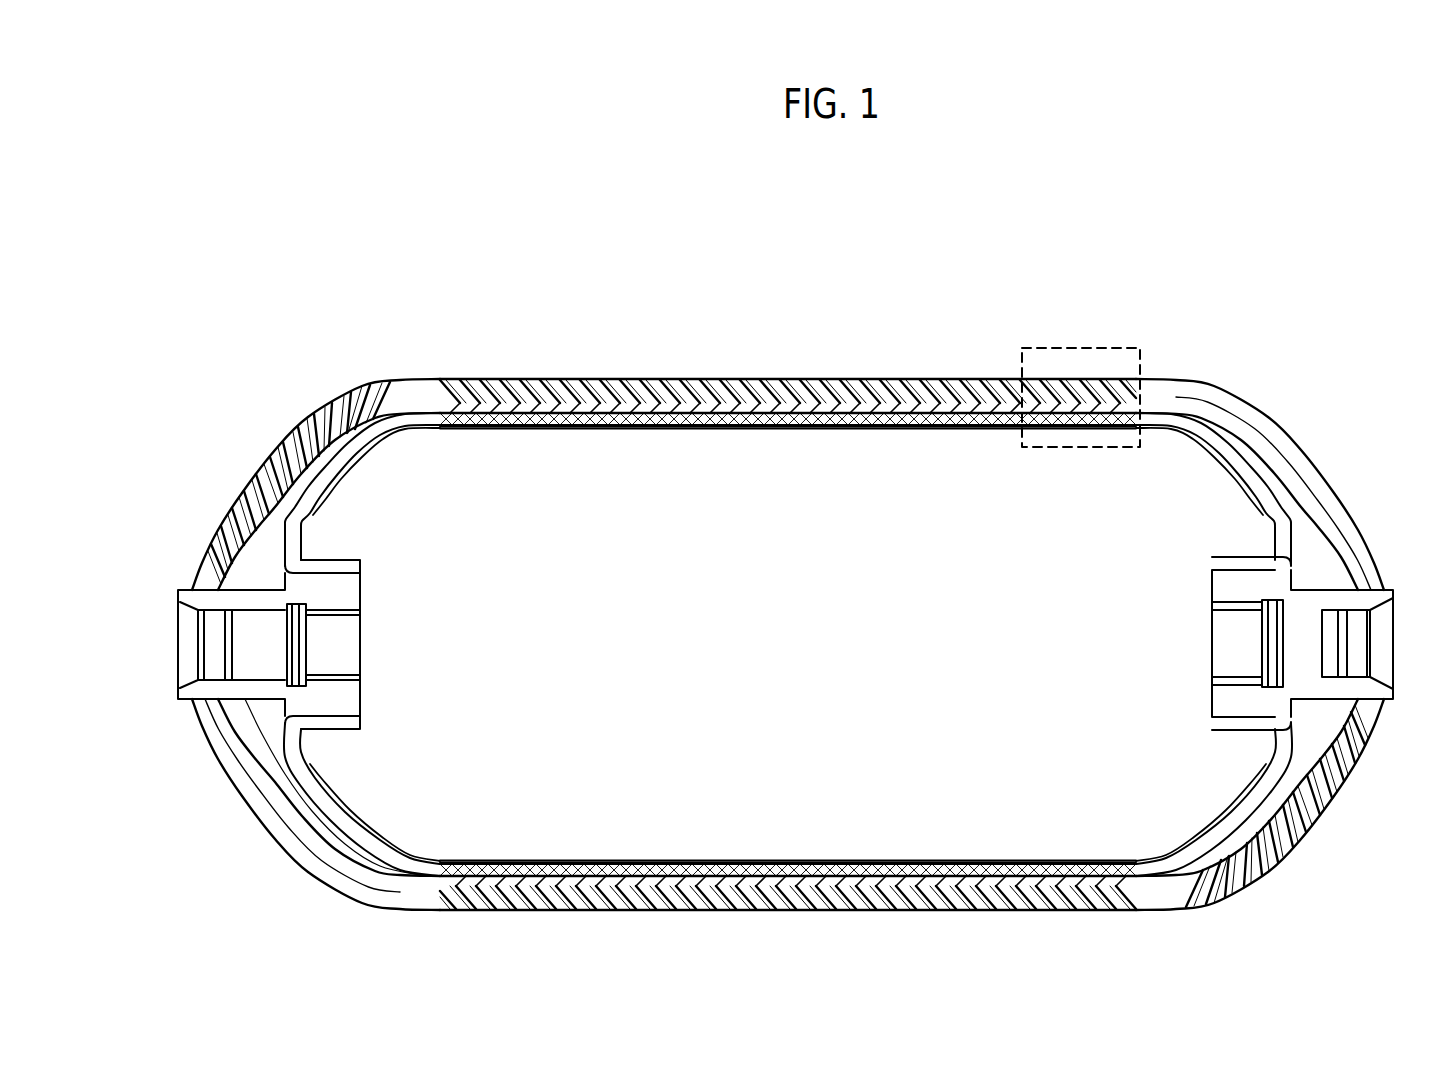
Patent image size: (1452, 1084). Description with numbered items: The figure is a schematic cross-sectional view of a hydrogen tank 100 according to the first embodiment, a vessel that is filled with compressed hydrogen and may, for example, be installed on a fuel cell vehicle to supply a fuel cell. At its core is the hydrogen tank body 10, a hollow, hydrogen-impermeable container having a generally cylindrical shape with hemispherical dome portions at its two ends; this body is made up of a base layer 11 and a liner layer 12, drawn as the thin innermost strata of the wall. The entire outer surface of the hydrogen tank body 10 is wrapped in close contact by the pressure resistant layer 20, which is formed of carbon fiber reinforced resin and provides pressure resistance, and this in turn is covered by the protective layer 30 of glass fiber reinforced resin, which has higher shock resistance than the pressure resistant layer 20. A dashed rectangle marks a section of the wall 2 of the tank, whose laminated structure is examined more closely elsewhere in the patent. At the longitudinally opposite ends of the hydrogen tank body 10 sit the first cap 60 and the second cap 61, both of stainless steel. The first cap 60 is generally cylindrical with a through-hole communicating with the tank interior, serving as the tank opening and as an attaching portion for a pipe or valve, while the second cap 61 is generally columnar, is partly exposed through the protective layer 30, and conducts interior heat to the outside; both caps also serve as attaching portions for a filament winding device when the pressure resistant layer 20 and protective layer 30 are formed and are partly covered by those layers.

The hydrogen tank 100 is at (1319, 330).
The wall 2 is at (1140, 348).
The hydrogen tank body 10 is at (940, 445).
The base layer 11 is at (866, 426).
The liner layer 12 is at (860, 429).
The pressure resistant layer 20 is at (608, 379).
The protective layer 30 is at (806, 379).
The first cap 60 is at (178, 591).
The second cap 61 is at (1393, 590).